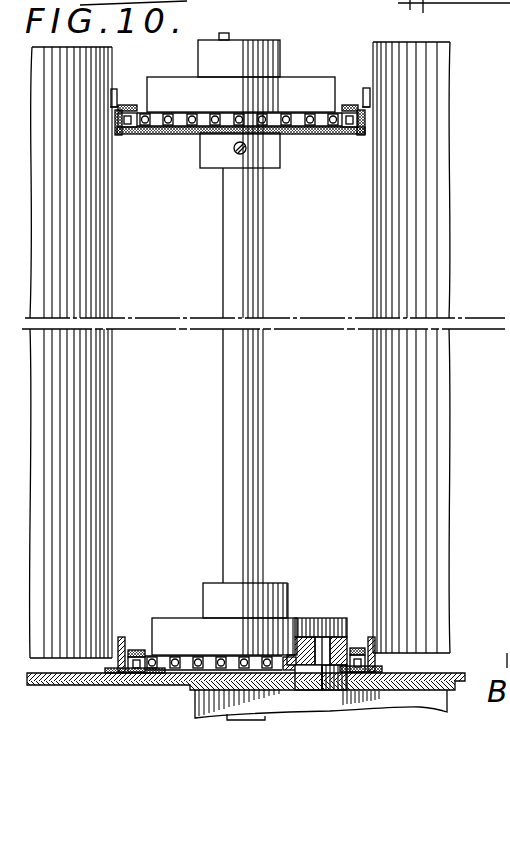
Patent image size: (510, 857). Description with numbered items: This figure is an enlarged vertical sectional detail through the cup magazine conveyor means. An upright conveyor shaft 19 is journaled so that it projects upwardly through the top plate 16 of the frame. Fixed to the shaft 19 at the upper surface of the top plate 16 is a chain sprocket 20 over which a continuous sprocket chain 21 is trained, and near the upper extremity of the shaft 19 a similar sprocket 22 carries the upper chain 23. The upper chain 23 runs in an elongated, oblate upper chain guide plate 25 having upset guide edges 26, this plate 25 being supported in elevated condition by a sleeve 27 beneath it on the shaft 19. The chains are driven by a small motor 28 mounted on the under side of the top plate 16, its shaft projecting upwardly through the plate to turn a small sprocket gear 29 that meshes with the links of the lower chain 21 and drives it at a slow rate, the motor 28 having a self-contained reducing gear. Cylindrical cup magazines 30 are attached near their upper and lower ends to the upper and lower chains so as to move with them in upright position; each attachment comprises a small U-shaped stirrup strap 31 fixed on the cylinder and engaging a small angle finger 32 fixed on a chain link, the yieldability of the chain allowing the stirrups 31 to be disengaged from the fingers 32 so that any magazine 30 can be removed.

The top plate 16 is at (458, 671).
The upright conveyor shaft 19 is at (252, 420).
The chain sprocket 20 is at (292, 618).
The sprocket chain 21 is at (202, 658).
The sprocket 22 is at (288, 95).
The chain 23 is at (352, 125).
The upper chain guide plate 25 is at (186, 134).
The upset guide edges 26 is at (117, 118).
The sleeve 27 is at (273, 168).
The motor 28 is at (408, 697).
The sprocket gear 29 is at (340, 640).
The cup magazine 30 is at (74, 615).
The stirrup strap 31 is at (122, 640).
The angle finger 32 is at (120, 637).